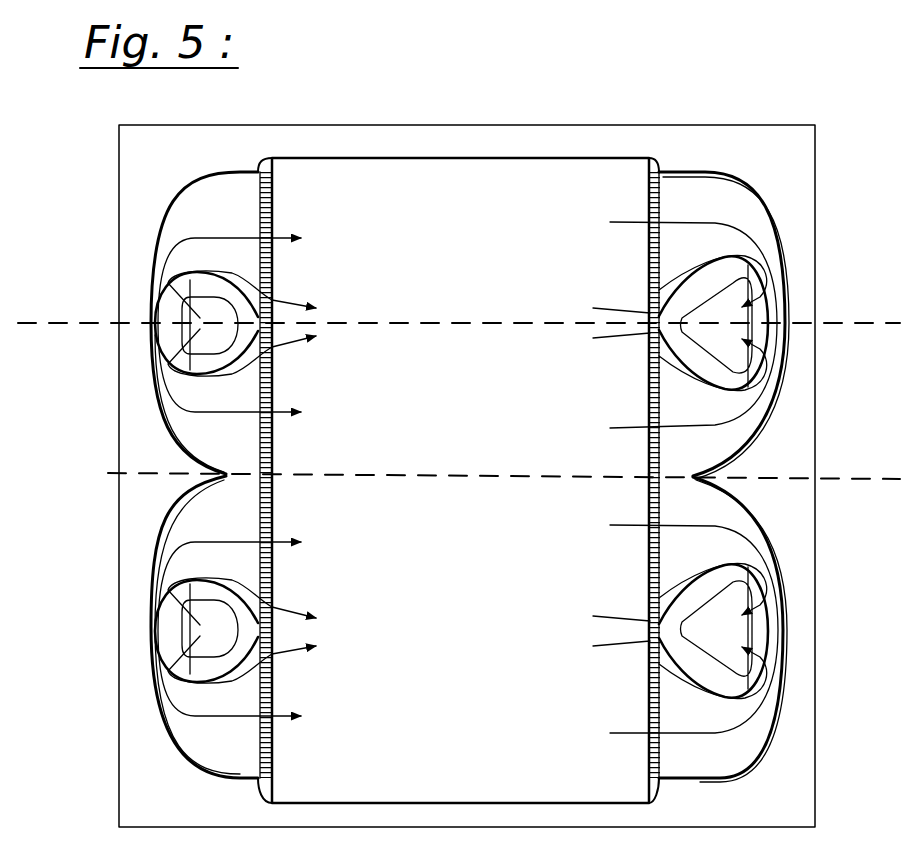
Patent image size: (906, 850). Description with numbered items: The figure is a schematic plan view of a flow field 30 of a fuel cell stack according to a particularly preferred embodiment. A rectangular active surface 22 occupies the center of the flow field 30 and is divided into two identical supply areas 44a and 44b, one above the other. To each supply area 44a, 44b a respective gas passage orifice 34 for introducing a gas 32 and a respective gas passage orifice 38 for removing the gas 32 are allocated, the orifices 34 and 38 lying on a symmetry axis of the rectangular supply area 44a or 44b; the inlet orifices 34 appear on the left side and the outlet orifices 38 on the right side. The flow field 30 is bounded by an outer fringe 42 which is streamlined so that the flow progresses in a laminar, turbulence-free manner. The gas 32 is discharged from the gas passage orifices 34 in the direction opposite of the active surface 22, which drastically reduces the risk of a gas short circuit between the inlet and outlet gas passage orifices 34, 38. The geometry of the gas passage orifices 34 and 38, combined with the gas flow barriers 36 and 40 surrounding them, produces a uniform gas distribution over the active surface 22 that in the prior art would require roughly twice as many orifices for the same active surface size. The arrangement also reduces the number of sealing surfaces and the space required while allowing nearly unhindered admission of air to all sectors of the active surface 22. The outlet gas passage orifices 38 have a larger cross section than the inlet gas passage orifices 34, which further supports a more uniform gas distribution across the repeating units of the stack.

The active surface 22 is at (474, 496).
The flow field 30 is at (140, 805).
The gas 32 is at (292, 302).
The gas passage orifice 34 is at (205, 339).
The gas flow barrier 36 is at (214, 361).
The gas passage orifice 38 is at (690, 338).
The gas flow barrier 40 is at (700, 362).
The outer fringe 42 is at (176, 208).
The supply area 44a is at (433, 382).
The supply area 44b is at (443, 701).